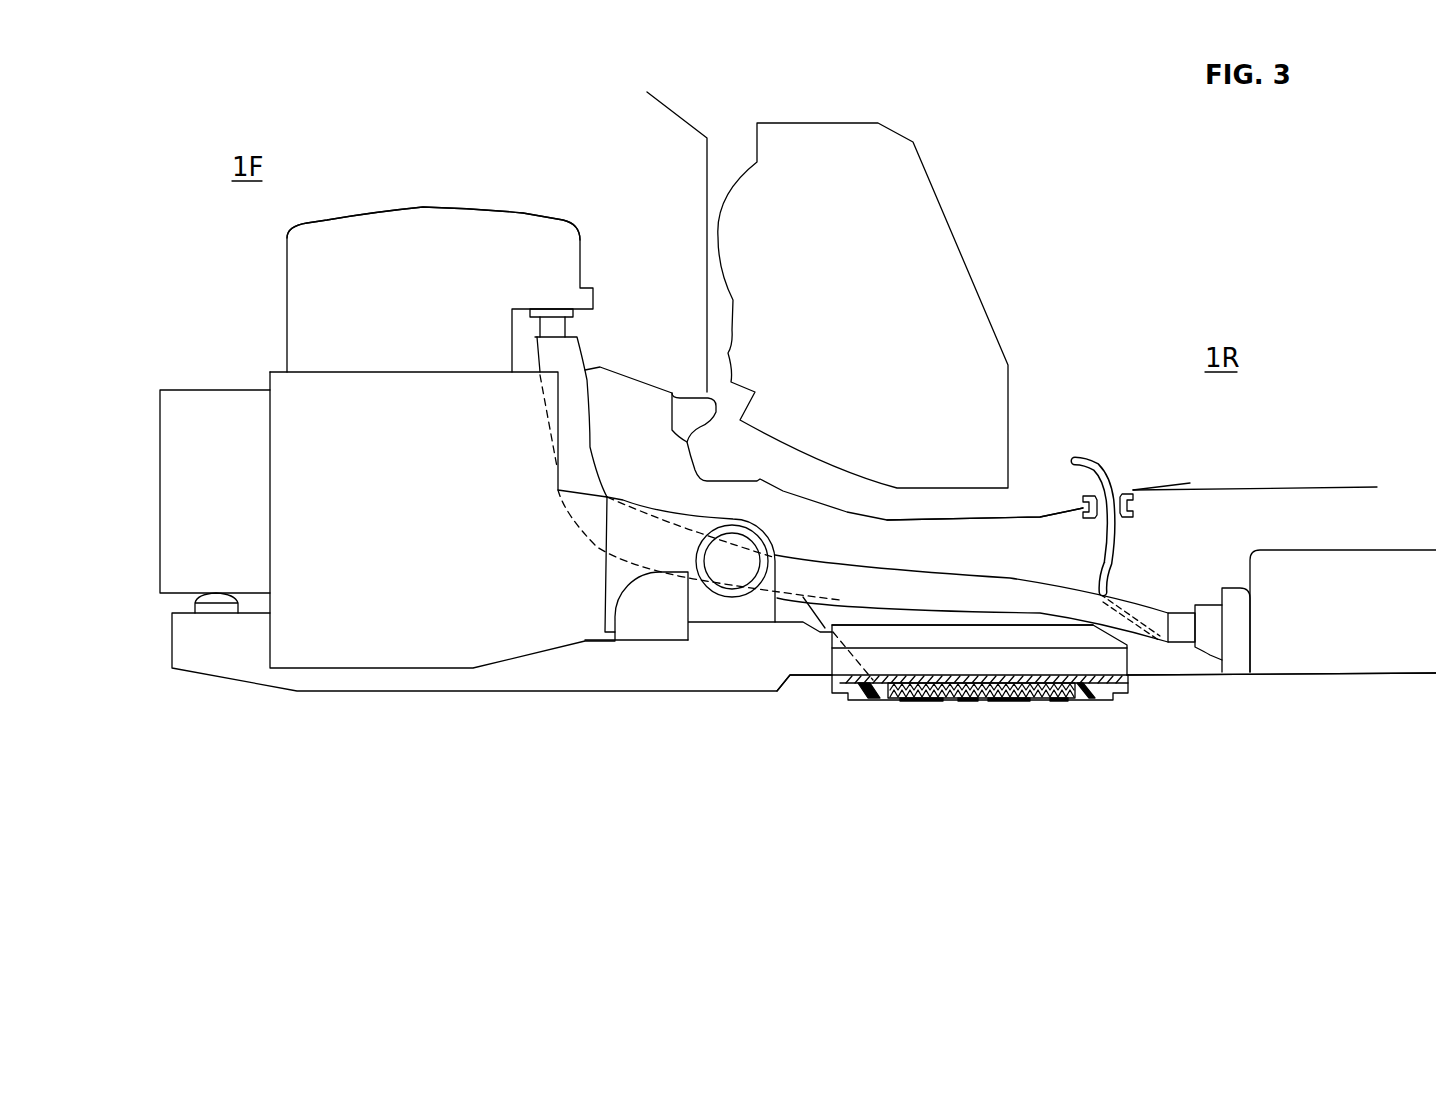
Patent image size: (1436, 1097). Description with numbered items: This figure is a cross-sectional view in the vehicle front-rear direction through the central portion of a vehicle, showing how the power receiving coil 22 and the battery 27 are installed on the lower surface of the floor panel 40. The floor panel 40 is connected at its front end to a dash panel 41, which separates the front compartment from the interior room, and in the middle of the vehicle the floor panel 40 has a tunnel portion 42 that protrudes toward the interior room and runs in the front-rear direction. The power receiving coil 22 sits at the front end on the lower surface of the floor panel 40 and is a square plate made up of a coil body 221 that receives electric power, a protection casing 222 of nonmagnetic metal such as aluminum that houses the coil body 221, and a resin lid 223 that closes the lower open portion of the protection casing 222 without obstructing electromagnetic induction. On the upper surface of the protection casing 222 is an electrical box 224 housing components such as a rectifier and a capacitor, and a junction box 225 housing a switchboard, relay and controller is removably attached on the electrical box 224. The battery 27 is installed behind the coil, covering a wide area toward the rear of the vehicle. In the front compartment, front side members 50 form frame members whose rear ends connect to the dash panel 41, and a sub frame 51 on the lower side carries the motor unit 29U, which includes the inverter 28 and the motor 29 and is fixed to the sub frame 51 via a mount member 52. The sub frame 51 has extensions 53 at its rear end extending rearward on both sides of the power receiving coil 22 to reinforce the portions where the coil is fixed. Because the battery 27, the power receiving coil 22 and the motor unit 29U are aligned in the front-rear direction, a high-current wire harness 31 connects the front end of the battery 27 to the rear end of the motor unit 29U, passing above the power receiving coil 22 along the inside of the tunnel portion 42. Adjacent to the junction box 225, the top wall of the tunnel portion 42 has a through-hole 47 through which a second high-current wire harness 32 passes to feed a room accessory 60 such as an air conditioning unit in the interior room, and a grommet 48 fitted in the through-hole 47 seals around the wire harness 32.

The power receiving coil 22 is at (959, 716).
The coil body 221 is at (977, 703).
The protection casing 222 is at (908, 683).
The lid 223 is at (1025, 700).
The electrical box 224 is at (990, 663).
The junction box 225 is at (907, 623).
The battery 27 is at (1340, 548).
The inverter 28 is at (318, 222).
The motor 29 is at (270, 372).
The motor unit 29U is at (380, 197).
The wire harness 31 is at (580, 352).
The wire harness 32 is at (1110, 482).
The floor panel 40 is at (1172, 676).
The dash panel 41 is at (707, 268).
The tunnel portion 42 is at (1272, 487).
The through-hole 47 is at (1120, 490).
The grommet 48 is at (1133, 495).
The front side member 50 is at (195, 390).
The sub frame 51 is at (440, 693).
The mount member 52 is at (687, 598).
The extension 53 is at (808, 670).
The room accessory 60 is at (932, 168).